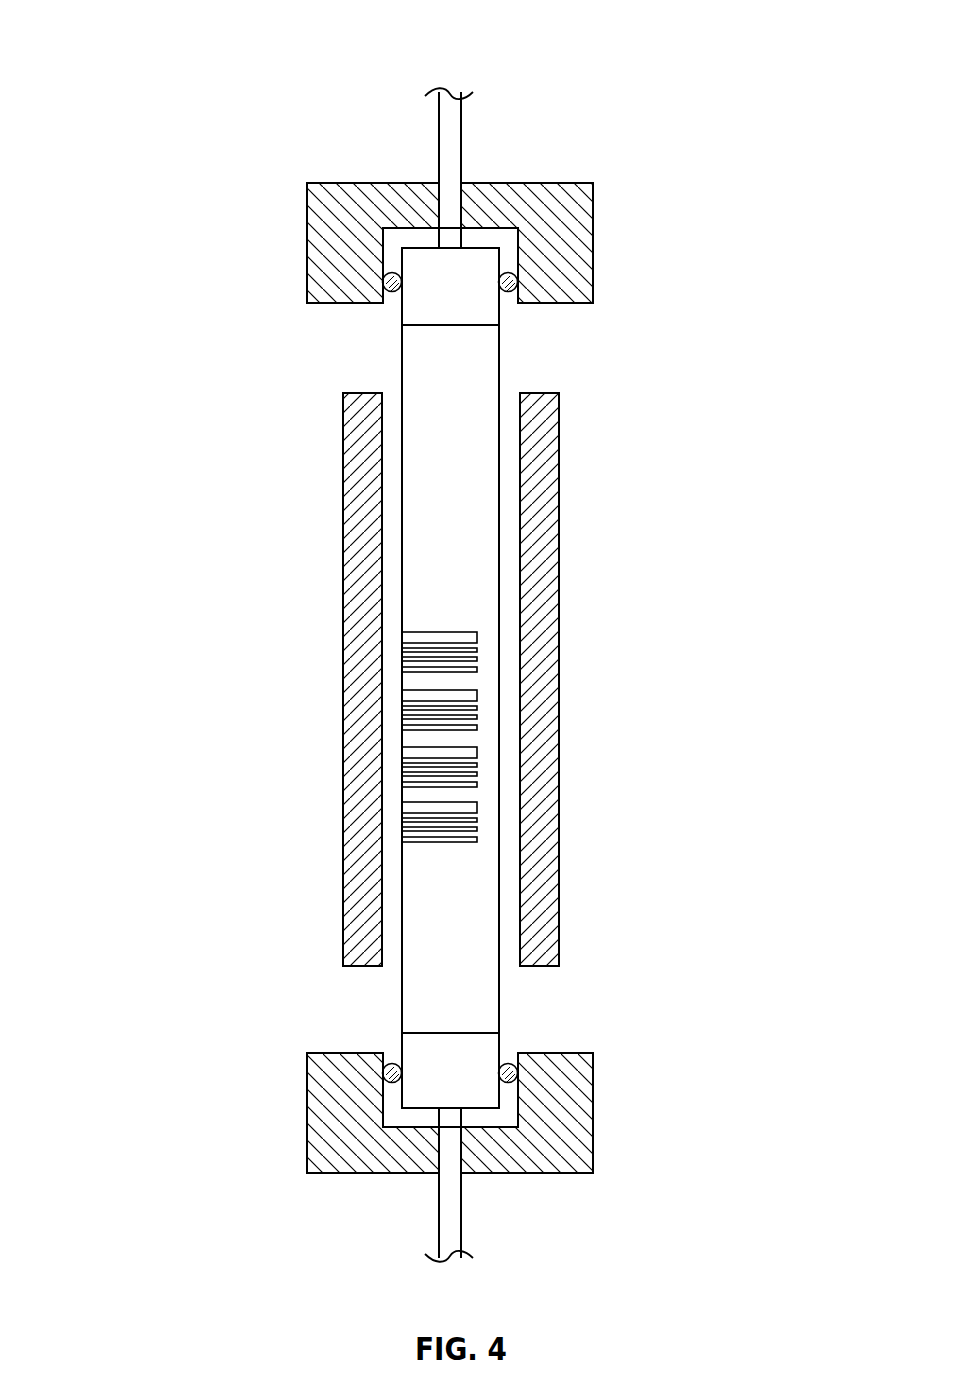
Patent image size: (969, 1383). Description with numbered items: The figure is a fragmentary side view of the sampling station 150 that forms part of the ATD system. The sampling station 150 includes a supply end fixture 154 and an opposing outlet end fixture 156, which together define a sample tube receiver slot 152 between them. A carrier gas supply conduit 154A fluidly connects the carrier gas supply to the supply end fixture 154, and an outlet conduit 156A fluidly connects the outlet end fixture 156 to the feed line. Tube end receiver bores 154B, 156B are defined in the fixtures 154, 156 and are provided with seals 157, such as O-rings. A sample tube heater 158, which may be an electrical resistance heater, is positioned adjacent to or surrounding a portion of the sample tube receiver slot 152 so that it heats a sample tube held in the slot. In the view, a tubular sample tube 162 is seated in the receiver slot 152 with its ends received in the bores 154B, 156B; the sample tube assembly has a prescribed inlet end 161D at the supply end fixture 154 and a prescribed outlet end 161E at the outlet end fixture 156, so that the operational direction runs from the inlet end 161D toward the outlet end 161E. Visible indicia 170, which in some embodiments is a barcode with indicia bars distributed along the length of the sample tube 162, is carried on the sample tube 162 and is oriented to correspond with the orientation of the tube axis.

The sampling station 150 is at (142, 44).
The sample tube receiver slot 152 is at (388, 548).
The supply end fixture 154 is at (317, 1113).
The carrier gas supply conduit 154A is at (455, 1242).
The tube end receiver bore 154B is at (512, 1098).
The outlet end fixture 156 is at (323, 212).
The outlet conduit 156A is at (455, 135).
The tube end receiver bore 156B is at (510, 257).
The seals 157 is at (392, 293).
The sample tube heater 158 is at (358, 648).
The inlet end 161D is at (476, 1112).
The outlet end 161E is at (475, 247).
The sample tube 162 is at (480, 527).
The visible indicia 170 is at (448, 840).